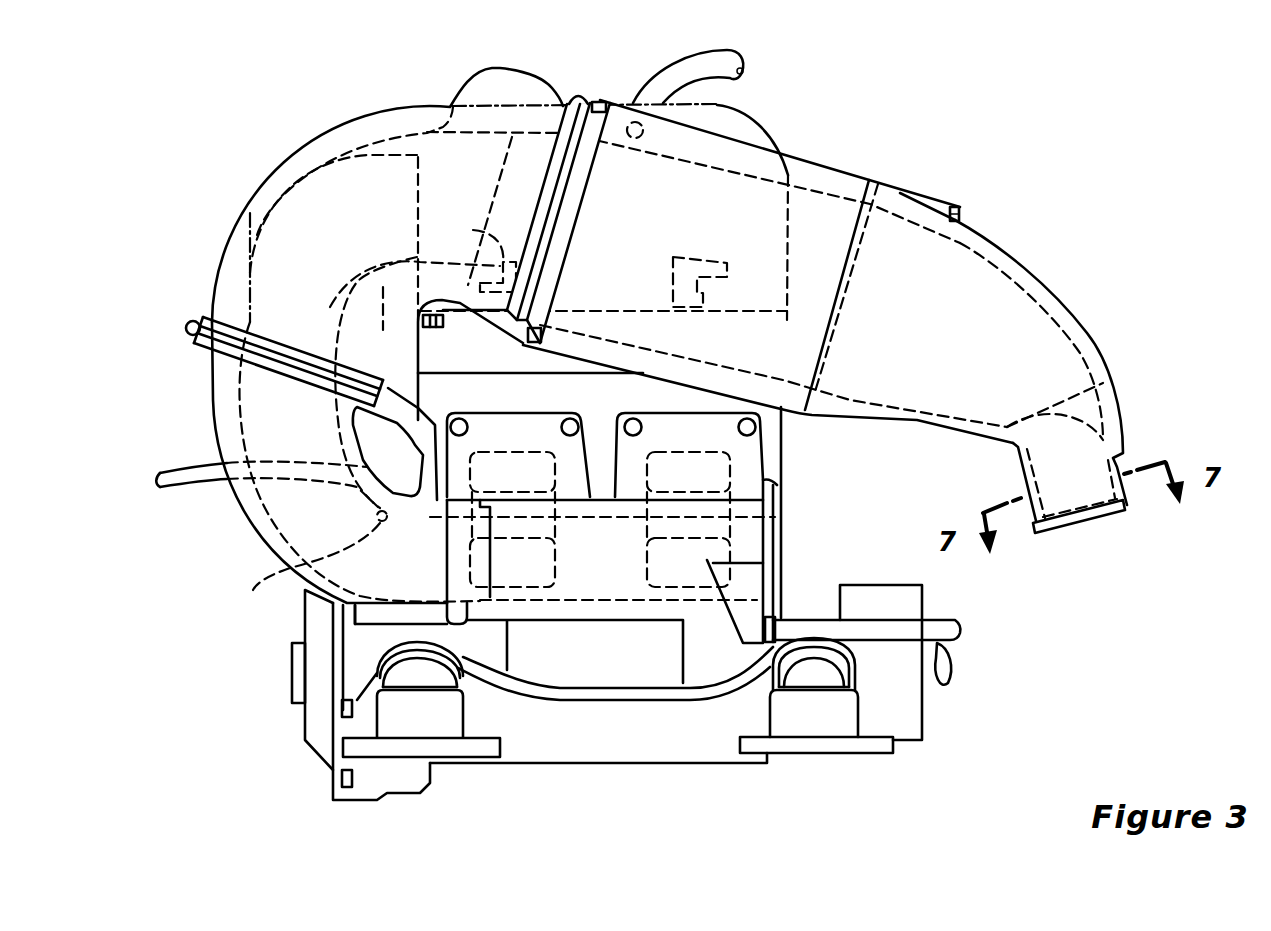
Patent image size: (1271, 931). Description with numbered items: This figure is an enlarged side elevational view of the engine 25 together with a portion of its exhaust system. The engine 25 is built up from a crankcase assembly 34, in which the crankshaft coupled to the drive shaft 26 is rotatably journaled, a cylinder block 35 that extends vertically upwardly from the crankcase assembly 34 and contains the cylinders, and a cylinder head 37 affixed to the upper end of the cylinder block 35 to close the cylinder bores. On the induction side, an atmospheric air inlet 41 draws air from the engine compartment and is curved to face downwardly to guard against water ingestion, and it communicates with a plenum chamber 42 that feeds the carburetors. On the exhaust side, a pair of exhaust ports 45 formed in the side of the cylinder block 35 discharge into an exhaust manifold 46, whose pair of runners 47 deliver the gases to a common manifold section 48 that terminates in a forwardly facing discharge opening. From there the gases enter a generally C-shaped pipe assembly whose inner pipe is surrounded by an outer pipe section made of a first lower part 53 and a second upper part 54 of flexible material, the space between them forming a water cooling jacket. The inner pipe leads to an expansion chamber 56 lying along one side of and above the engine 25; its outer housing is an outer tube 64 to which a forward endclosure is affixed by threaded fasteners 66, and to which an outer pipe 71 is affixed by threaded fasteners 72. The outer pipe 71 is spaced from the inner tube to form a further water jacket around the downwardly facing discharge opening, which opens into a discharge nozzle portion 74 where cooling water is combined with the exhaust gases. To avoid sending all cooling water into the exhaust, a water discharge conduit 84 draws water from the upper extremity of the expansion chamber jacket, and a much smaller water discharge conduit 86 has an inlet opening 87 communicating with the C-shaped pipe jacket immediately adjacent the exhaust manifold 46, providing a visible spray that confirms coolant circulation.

The engine 25 is at (453, 795).
The drive shaft 26 is at (930, 680).
The crankcase assembly 34 is at (603, 765).
The cylinder block 35 is at (437, 394).
The cylinder head 37 is at (503, 262).
The atmospheric air inlet 41 is at (250, 263).
The plenum chamber 42 is at (750, 113).
The exhaust ports 45 is at (500, 462).
The exhaust manifold 46 is at (617, 610).
The runners 47 is at (727, 528).
The common manifold section 48 is at (567, 590).
The first lower part 53 is at (247, 513).
The second upper part 54 is at (250, 212).
The expansion chamber 56 is at (723, 177).
The outer tube 64 is at (833, 180).
The threaded fasteners 66 is at (597, 95).
The outer pipe 71 is at (1033, 263).
The threaded fasteners 72 is at (960, 217).
The discharge nozzle portion 74 is at (1097, 513).
The water discharge conduit 84 is at (683, 70).
The water discharge conduit 86 is at (187, 477).
The inlet opening 87 is at (253, 590).